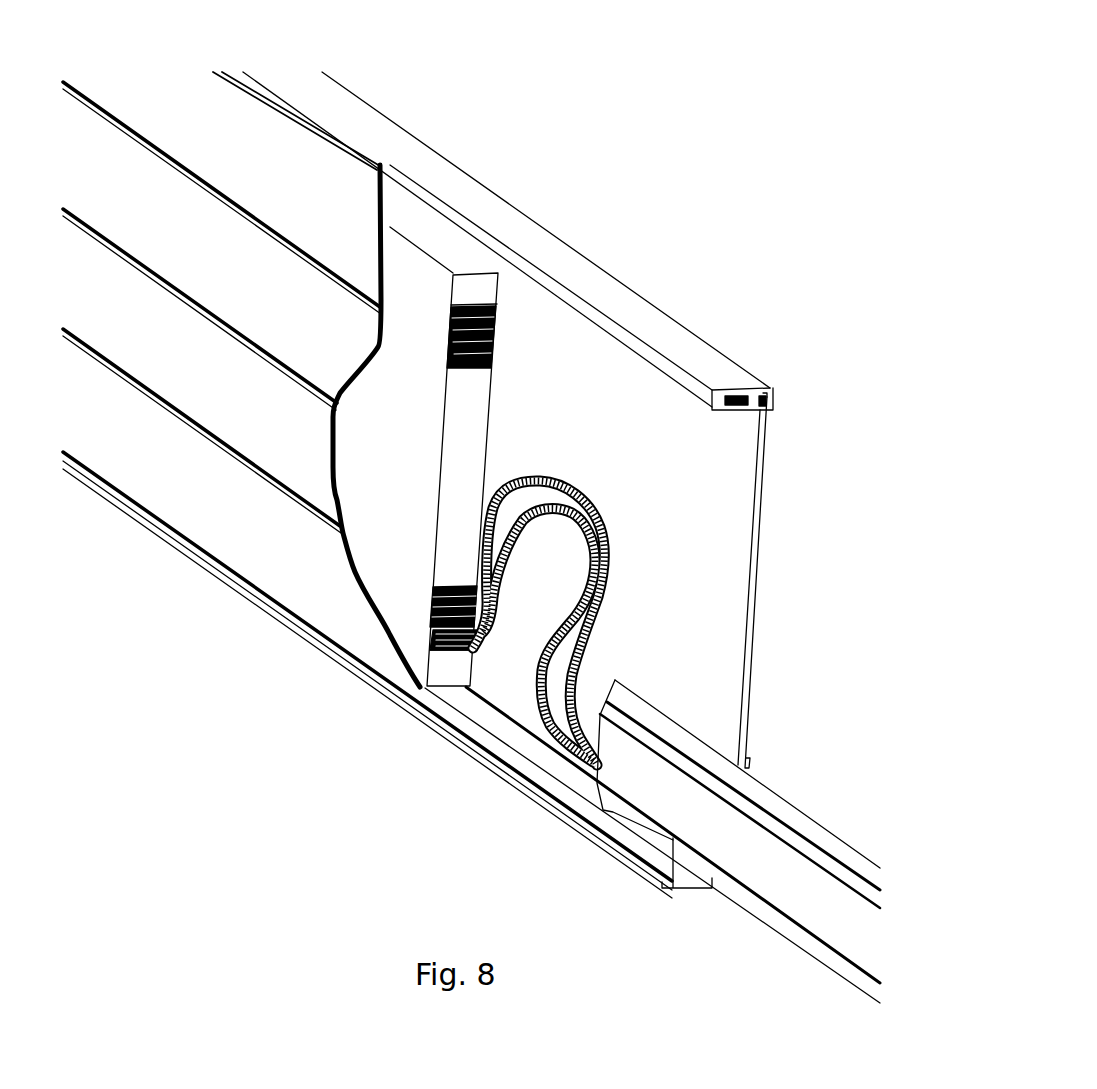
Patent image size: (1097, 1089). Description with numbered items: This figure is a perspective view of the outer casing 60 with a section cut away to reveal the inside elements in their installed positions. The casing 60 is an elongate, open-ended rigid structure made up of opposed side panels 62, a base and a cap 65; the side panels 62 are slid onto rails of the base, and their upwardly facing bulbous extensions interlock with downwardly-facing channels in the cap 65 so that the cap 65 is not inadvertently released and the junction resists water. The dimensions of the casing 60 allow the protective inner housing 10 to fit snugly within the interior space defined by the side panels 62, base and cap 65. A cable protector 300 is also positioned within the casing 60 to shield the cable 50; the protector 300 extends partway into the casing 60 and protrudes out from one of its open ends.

The protective inner housing 10 is at (305, 695).
The cable 50 is at (490, 847).
The outer casing 60 is at (783, 387).
The side panel 62 is at (130, 577).
The cap 65 is at (415, 152).
The cable protector 300 is at (732, 948).